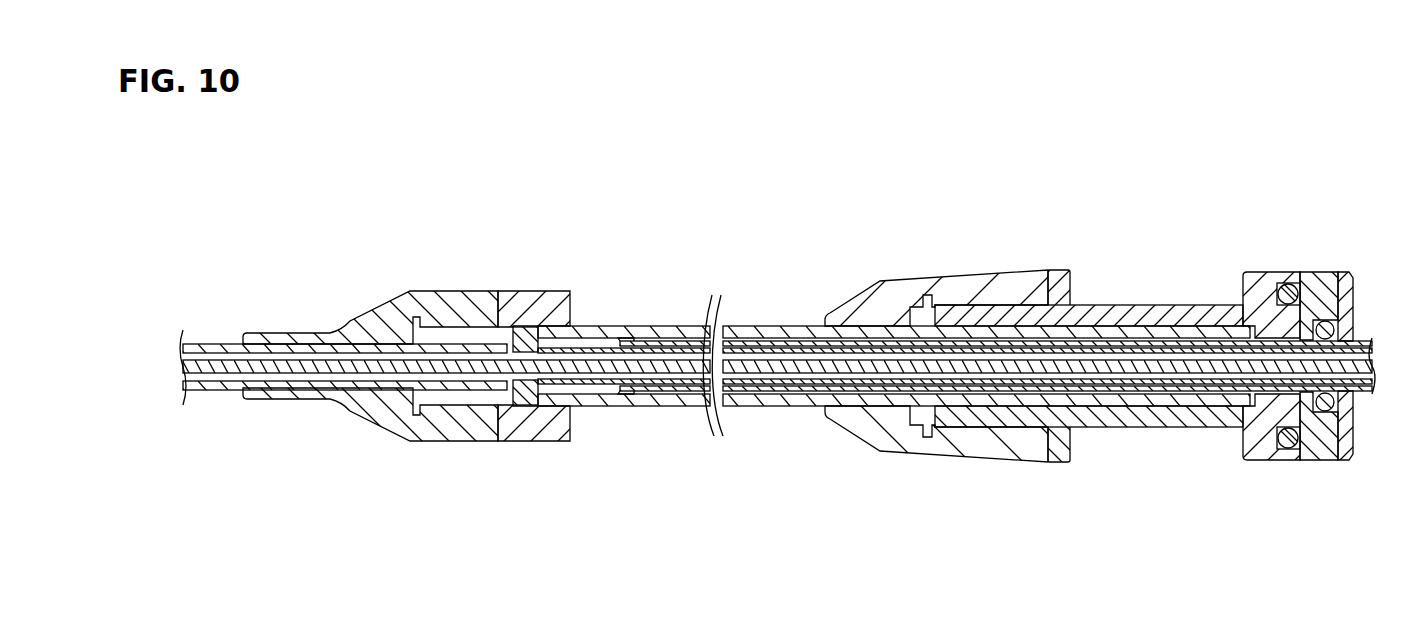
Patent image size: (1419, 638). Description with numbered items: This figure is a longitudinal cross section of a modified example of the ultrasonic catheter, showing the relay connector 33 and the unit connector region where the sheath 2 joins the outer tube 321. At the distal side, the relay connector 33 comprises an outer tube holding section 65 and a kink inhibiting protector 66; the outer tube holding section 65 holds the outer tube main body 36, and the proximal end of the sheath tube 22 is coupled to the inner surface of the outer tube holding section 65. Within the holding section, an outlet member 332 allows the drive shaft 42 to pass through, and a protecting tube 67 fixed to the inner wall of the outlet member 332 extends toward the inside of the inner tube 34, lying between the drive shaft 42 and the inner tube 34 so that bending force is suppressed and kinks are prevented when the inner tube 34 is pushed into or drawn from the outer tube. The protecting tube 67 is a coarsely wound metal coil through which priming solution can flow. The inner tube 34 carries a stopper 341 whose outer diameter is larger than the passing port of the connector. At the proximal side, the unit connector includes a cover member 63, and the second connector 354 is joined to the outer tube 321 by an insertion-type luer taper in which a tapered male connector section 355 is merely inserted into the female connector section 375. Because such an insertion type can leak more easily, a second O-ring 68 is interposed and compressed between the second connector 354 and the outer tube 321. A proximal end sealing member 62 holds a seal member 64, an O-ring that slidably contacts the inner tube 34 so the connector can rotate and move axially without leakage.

The sheath 2 is at (226, 330).
The sheath tube 22 is at (236, 395).
The relay connector 33 is at (406, 350).
The inner tube 34 is at (749, 341).
The outer tube main body 36 is at (792, 326).
The drive shaft 42 is at (754, 374).
The proximal end sealing member 62 is at (1347, 452).
The cover member 63 is at (991, 272).
The seal member 64 is at (1325, 412).
The outer tube holding section 65 is at (536, 291).
The kink inhibiting protector 66 is at (403, 291).
The protecting tube 67 is at (582, 385).
The second O-ring 68 is at (1289, 285).
The outer tube 321 is at (1212, 305).
The outlet member 332 is at (520, 406).
The stopper 341 is at (627, 393).
The second connector 354 is at (1338, 275).
The tapered male connector section 355 is at (1272, 408).
The female connector section 375 is at (1290, 448).